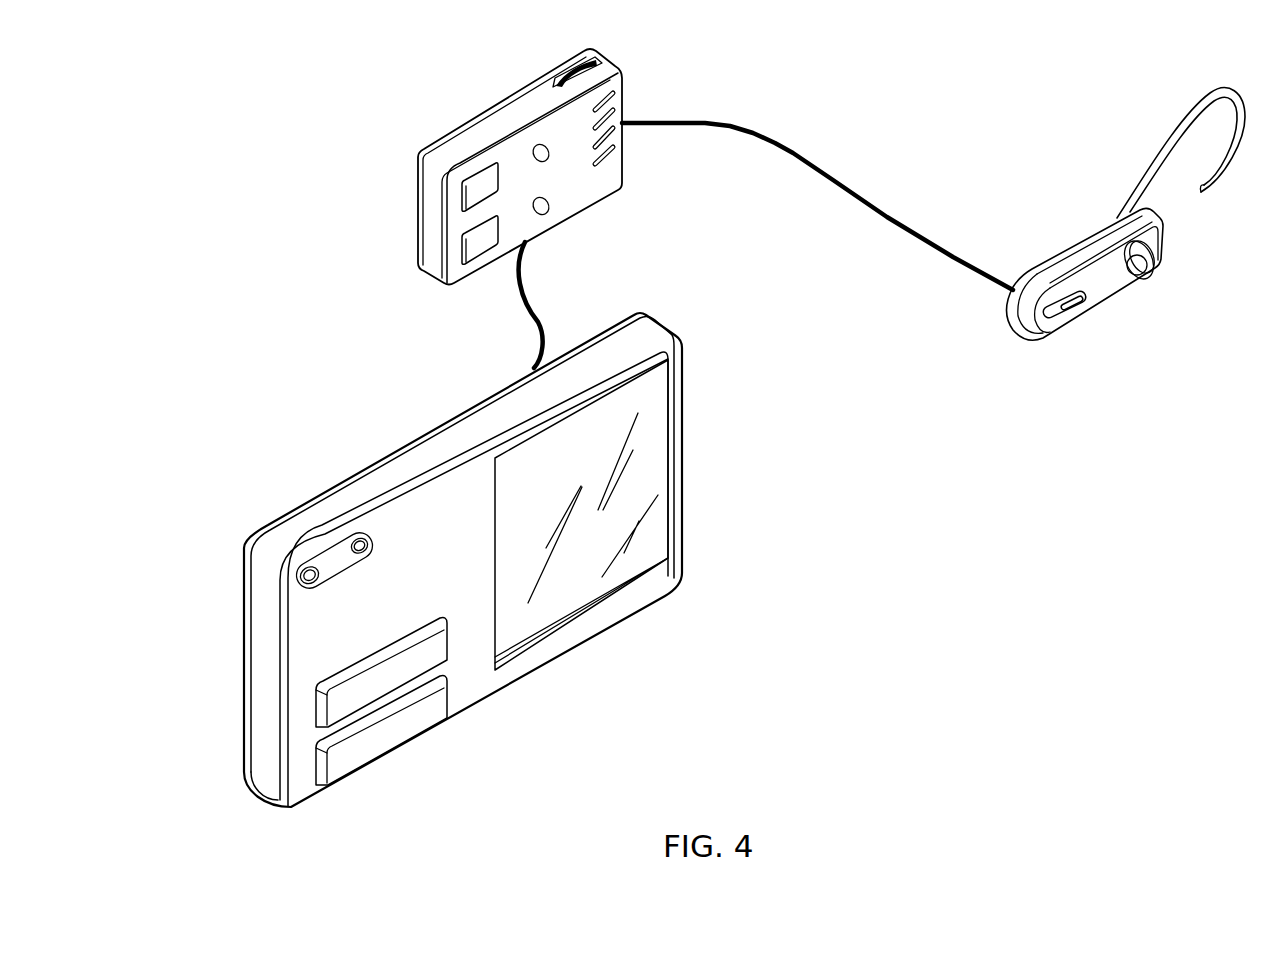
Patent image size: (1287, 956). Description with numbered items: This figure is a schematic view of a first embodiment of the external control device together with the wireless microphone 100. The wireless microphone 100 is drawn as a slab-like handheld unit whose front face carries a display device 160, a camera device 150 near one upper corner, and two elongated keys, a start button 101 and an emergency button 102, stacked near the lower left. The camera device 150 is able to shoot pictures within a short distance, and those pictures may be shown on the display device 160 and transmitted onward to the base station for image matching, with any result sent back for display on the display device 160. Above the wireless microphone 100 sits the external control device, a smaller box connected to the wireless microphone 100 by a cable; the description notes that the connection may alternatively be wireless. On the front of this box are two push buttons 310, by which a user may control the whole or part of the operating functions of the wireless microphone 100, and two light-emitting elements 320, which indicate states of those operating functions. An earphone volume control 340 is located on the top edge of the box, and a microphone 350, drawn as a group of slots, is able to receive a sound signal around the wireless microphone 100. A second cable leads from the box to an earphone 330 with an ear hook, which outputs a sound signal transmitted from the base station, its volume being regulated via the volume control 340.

The wireless microphone 100 is at (391, 447).
The start button 101 is at (316, 705).
The emergency button 102 is at (316, 762).
The camera device 150 is at (308, 553).
The display device 160 is at (538, 457).
The push buttons 310 is at (460, 197).
The light-emitting elements 320 is at (548, 158).
The earphone 330 is at (1082, 240).
The earphone volume control 340 is at (560, 73).
The microphone 350 is at (605, 90).